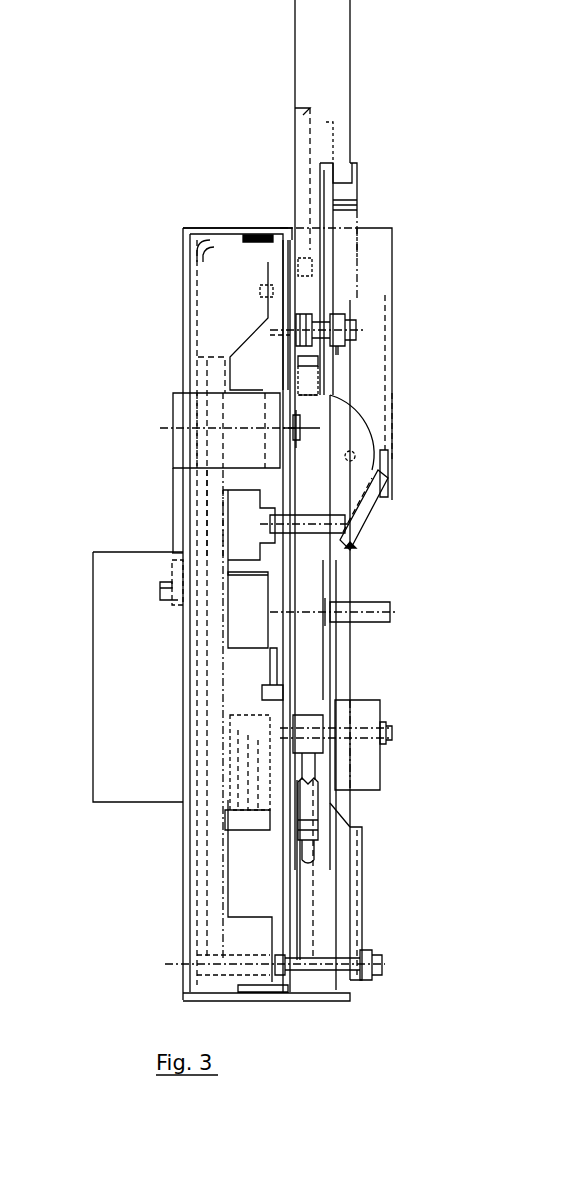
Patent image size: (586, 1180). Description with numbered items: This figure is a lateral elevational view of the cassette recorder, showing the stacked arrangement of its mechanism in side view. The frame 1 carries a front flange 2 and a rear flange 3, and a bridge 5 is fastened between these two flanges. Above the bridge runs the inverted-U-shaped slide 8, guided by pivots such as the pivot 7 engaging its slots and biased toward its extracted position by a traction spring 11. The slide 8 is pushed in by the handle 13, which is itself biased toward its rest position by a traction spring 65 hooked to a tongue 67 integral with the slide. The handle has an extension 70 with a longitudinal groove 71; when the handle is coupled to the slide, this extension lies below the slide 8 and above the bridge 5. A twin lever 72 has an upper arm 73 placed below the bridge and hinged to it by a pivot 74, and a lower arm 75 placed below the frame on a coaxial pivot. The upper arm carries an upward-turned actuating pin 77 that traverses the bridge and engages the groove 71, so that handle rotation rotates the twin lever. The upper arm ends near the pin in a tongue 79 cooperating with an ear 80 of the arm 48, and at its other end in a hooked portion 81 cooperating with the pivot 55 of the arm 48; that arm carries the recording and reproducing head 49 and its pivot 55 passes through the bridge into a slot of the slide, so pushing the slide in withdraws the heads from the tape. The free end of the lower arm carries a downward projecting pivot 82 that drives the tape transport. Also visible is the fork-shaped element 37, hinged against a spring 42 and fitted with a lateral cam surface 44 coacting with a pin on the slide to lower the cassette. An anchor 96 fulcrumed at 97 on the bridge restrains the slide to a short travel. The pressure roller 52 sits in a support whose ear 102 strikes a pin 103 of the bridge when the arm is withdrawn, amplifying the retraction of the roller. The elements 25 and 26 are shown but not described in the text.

The frame 1 is at (185, 348).
The front flange 2 is at (232, 243).
The rear flange 3 is at (280, 1000).
The bridge 5 is at (385, 244).
The pivot 7 is at (390, 728).
The slide 8 is at (333, 562).
The traction spring 11 is at (310, 375).
The handle 13 is at (312, 38).
The block 25 is at (370, 770).
The pin 26 is at (393, 612).
The fork-shaped element 37 is at (372, 505).
The spring 42 is at (385, 393).
The lateral cam surface 44 is at (345, 437).
The arm 48 is at (208, 918).
The recording and reproducing head 49 is at (258, 635).
The pressure roller 52 is at (243, 830).
The pivot 55 is at (345, 530).
The traction spring 65 is at (352, 210).
The tongue 67 is at (355, 318).
The extension 70 is at (322, 203).
The longitudinal groove 71 is at (295, 120).
The twin lever 72 is at (218, 402).
The upper arm 73 is at (273, 352).
The pivot 74 is at (300, 452).
The lower arm 75 is at (175, 505).
The actuating pin 77 is at (302, 272).
The tongue 79 is at (262, 291).
The ear 80 is at (238, 312).
The hooked portion 81 is at (250, 534).
The pivot 82 is at (162, 592).
The anchor 96 is at (362, 875).
The fulcrum 97 is at (383, 965).
The ear 102 is at (262, 663).
The pin 103 is at (262, 693).